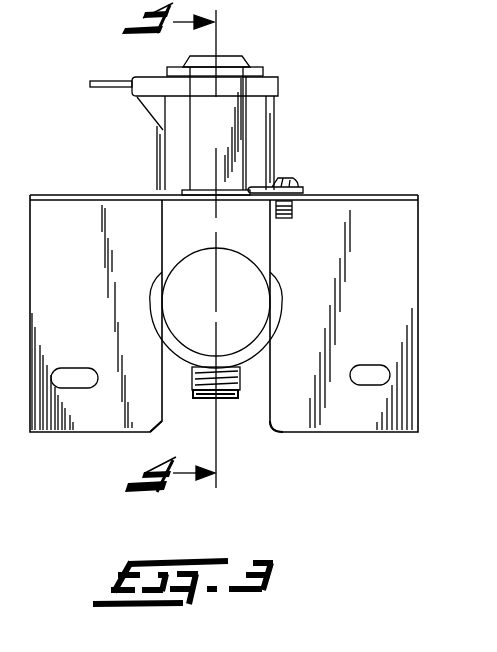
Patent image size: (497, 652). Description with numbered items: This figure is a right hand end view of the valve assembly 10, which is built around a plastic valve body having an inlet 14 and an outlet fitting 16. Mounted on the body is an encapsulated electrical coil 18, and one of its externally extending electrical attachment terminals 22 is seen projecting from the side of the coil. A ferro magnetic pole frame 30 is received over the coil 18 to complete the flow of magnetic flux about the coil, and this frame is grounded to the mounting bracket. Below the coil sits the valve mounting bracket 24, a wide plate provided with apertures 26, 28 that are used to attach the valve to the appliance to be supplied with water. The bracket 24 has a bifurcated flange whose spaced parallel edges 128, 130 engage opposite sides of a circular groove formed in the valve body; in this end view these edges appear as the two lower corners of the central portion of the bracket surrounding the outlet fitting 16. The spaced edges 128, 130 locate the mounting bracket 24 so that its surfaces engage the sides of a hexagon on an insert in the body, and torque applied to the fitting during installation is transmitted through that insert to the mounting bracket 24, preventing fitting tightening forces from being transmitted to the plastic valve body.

The valve assembly 10 is at (203, 133).
The inlet 14 is at (200, 186).
The outlet fitting 16 is at (226, 413).
The encapsulated electrical coil 18 is at (272, 142).
The electrical attachment terminal 22 is at (91, 81).
The valve mounting bracket 24 is at (78, 194).
The aperture 26 is at (67, 388).
The aperture 28 is at (368, 385).
The ferro magnetic pole frame 30 is at (223, 125).
The spaced parallel edge 128 is at (167, 410).
The spaced parallel edge 130 is at (263, 410).